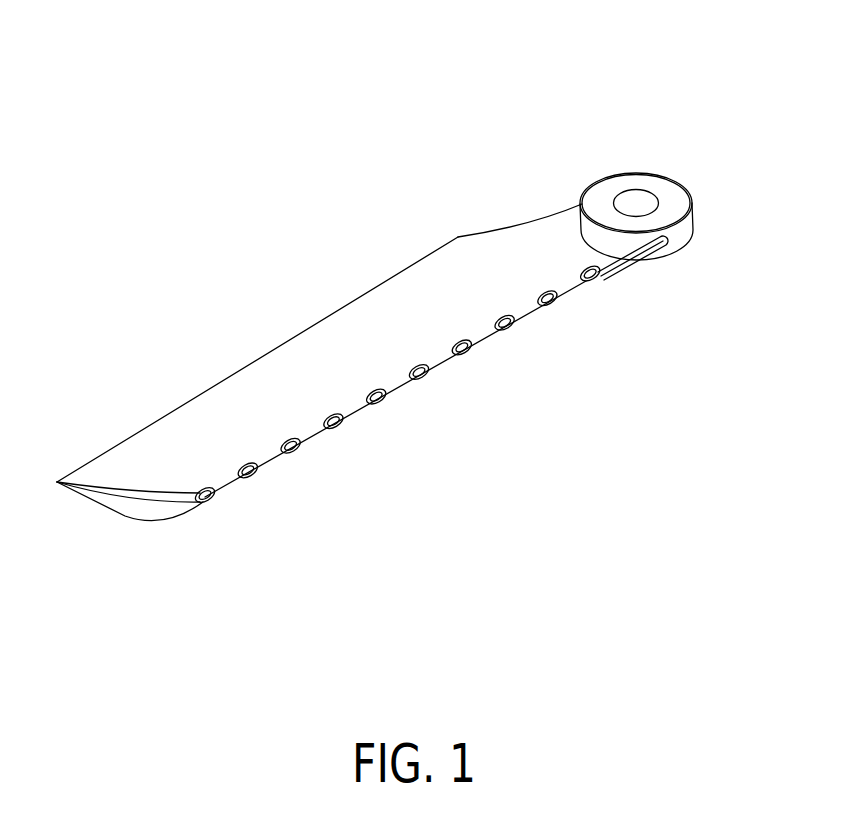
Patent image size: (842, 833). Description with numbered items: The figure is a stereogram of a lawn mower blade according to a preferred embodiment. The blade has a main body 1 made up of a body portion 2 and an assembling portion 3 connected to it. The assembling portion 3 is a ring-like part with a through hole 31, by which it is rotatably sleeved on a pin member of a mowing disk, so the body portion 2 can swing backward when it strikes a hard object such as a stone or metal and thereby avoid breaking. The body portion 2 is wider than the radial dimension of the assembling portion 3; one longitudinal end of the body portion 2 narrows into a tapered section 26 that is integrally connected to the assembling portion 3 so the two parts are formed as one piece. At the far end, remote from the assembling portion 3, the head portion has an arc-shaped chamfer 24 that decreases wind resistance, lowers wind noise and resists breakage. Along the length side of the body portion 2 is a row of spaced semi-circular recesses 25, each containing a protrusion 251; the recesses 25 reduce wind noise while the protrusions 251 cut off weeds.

The main body 1 is at (398, 145).
The body portion 2 is at (215, 287).
The assembling portion 3 is at (677, 197).
The chamfer 24 is at (141, 512).
The recess 25 is at (210, 503).
The protrusion 251 is at (203, 502).
The tapered section 26 is at (537, 235).
The through hole 31 is at (638, 200).